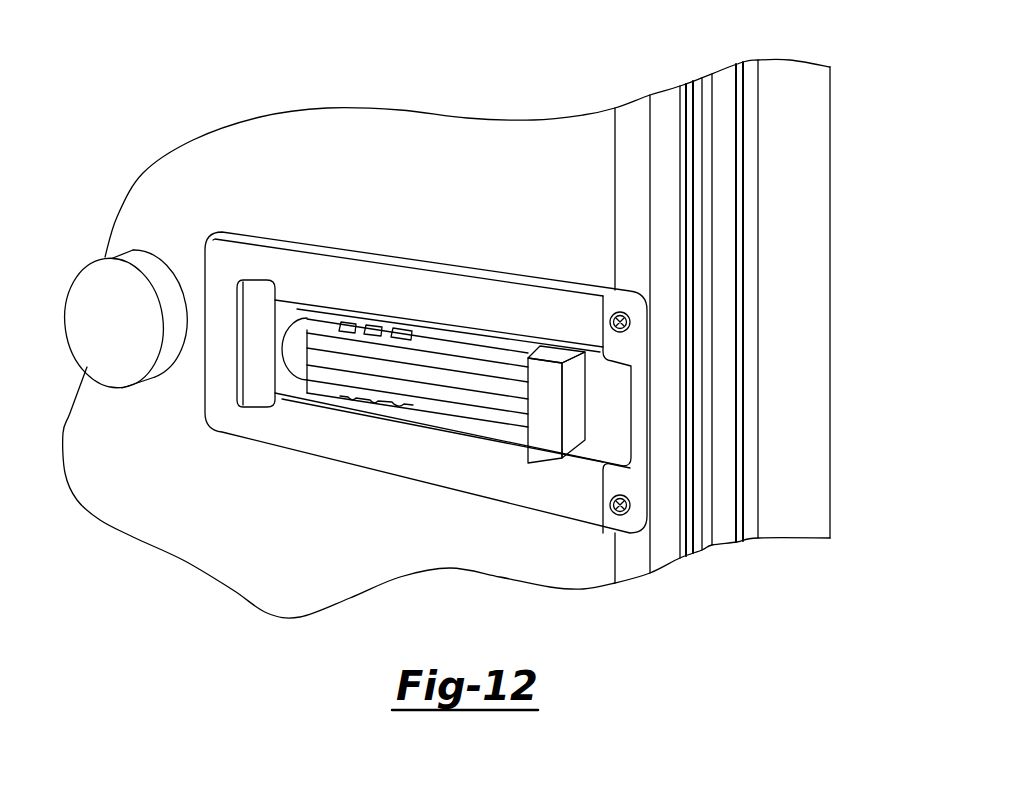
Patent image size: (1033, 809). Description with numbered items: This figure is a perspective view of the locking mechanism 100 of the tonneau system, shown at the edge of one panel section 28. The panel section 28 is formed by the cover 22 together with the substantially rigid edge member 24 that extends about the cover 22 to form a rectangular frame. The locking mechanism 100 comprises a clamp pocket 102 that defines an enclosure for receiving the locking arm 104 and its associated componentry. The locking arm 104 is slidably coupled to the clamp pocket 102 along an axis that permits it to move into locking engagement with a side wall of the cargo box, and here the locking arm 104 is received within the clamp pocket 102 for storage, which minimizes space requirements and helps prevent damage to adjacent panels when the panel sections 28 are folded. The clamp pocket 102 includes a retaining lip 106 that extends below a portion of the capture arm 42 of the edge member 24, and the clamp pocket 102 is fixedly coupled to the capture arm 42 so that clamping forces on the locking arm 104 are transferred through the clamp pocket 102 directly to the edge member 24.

The locking mechanism 100 is at (145, 130).
The cover 22 is at (305, 579).
The edge member 24 is at (669, 95).
The panel section 28 is at (143, 530).
The capture arm 42 is at (634, 121).
The clamp pocket 102 is at (330, 440).
The locking arm 104 is at (532, 425).
The retaining lip 106 is at (610, 321).